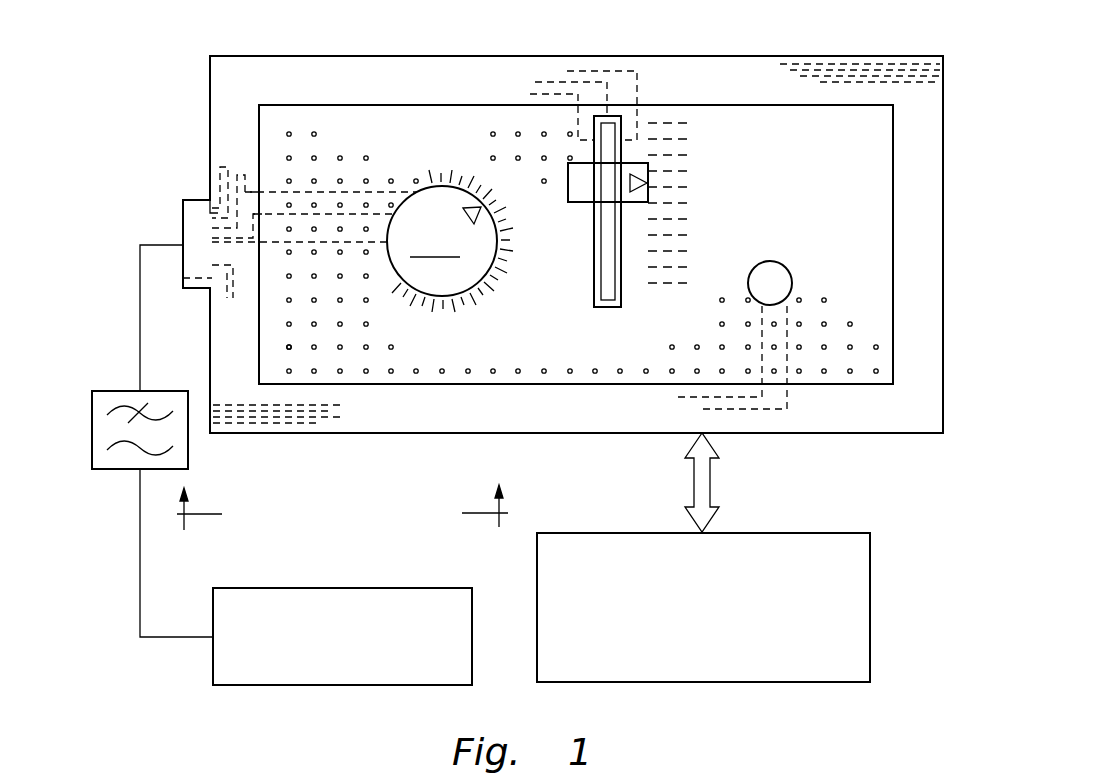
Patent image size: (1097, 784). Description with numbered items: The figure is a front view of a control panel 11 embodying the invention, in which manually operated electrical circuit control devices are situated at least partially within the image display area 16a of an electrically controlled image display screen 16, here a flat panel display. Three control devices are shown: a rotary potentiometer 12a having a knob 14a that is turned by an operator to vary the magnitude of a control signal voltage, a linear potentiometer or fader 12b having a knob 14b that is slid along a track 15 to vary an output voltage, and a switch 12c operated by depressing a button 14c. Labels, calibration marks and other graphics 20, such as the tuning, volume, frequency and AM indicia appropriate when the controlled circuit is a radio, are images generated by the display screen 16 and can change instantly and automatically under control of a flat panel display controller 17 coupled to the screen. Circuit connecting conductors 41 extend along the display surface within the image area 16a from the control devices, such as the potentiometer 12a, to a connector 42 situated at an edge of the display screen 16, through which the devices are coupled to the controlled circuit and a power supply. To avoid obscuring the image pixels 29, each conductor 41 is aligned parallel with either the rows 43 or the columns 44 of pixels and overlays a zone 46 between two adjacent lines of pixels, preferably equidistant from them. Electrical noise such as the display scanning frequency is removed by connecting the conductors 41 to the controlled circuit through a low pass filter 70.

The control panel 11 is at (190, 84).
The rotary potentiometer control device 12a is at (450, 246).
The linear potentiometer control device 12b is at (597, 213).
The switch control device 12c is at (765, 307).
The knob 14a is at (426, 183).
The knob 14b is at (620, 196).
The button 14c is at (795, 281).
The track 15 is at (622, 300).
The image display screen 16 is at (340, 434).
The image display area 16a is at (870, 205).
The flat panel display controller 17 is at (779, 533).
The graphics 20 is at (764, 108).
The image pixels 29 is at (314, 110).
The circuit connecting conductors 41 is at (346, 190).
The connector 42 is at (205, 195).
The rows of pixels 43 is at (270, 352).
The columns of pixels 44 is at (376, 396).
The zone 46 is at (268, 192).
The low pass filter 70 is at (190, 455).